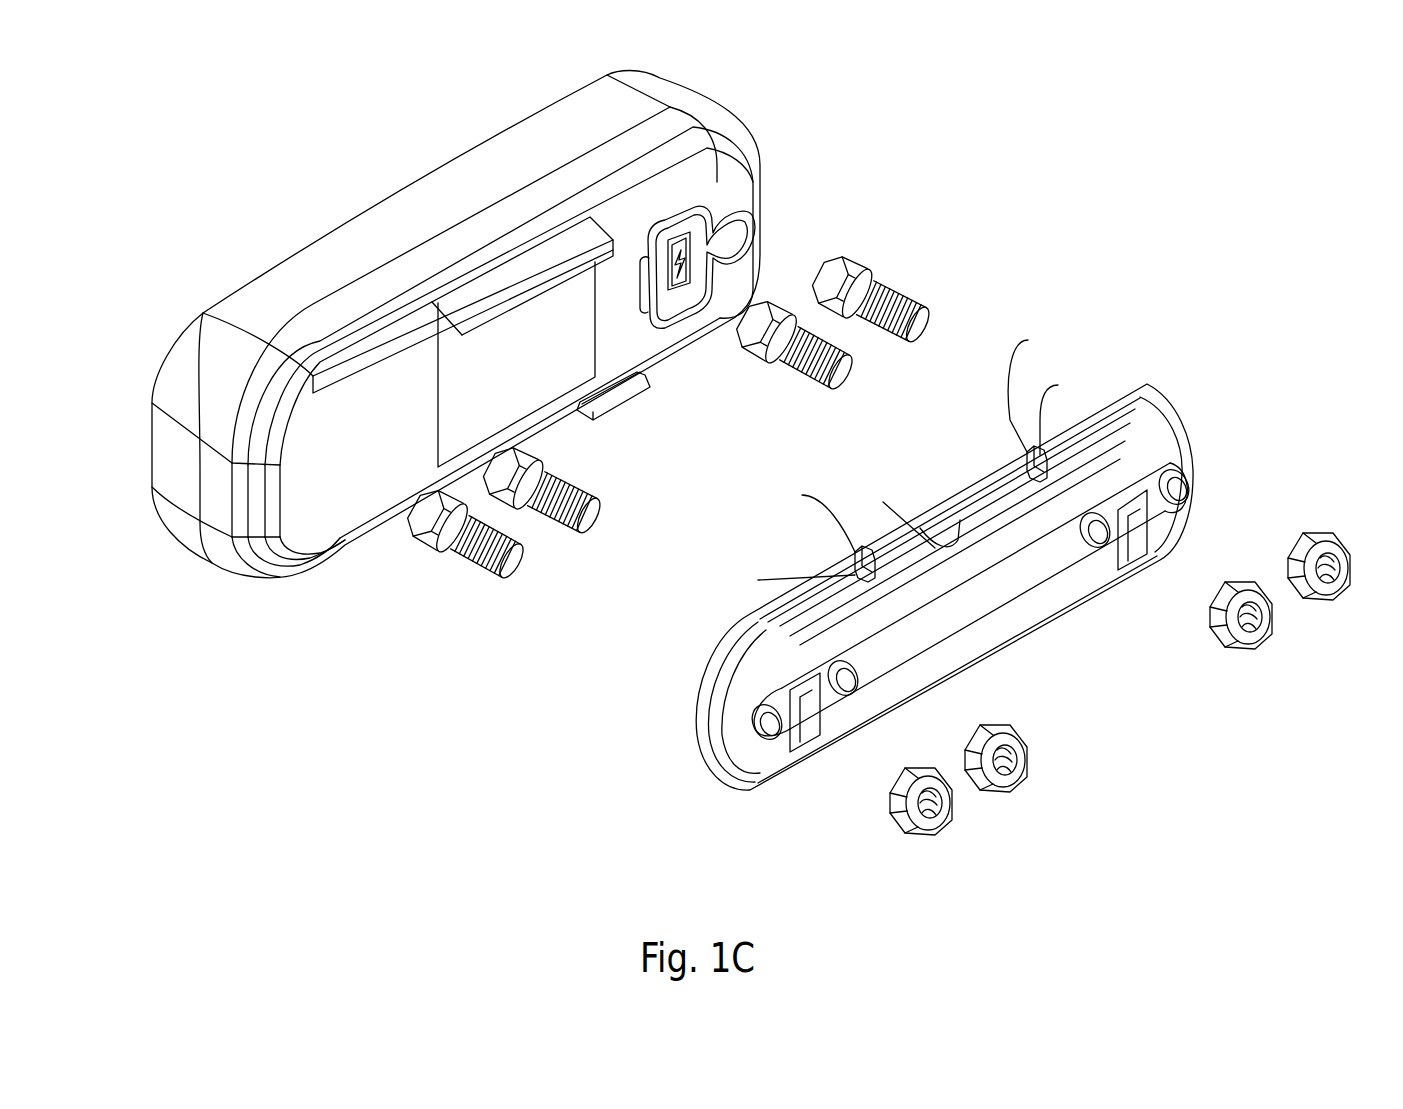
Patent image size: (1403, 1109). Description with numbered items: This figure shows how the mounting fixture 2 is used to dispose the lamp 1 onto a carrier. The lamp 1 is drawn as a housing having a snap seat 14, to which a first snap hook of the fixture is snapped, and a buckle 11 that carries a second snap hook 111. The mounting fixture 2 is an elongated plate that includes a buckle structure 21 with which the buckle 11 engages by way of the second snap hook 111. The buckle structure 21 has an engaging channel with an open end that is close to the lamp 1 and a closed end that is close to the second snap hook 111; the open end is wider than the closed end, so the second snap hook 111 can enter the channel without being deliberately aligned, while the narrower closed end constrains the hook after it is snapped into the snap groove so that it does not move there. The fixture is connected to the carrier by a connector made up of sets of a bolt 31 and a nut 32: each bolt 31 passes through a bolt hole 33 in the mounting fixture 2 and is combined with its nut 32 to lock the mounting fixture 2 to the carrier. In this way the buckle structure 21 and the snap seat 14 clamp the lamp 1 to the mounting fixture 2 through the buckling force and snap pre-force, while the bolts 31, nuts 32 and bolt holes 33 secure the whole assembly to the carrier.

The lamp 1 is at (216, 566).
The buckle 11 is at (430, 300).
The second snap hook 111 is at (437, 347).
The snap seat 14 is at (557, 433).
The mounting fixture 2 is at (938, 613).
The buckle structure 21 is at (932, 464).
The bolt 31 is at (461, 570).
The nut 32 is at (951, 821).
The bolt hole 33 is at (843, 698).